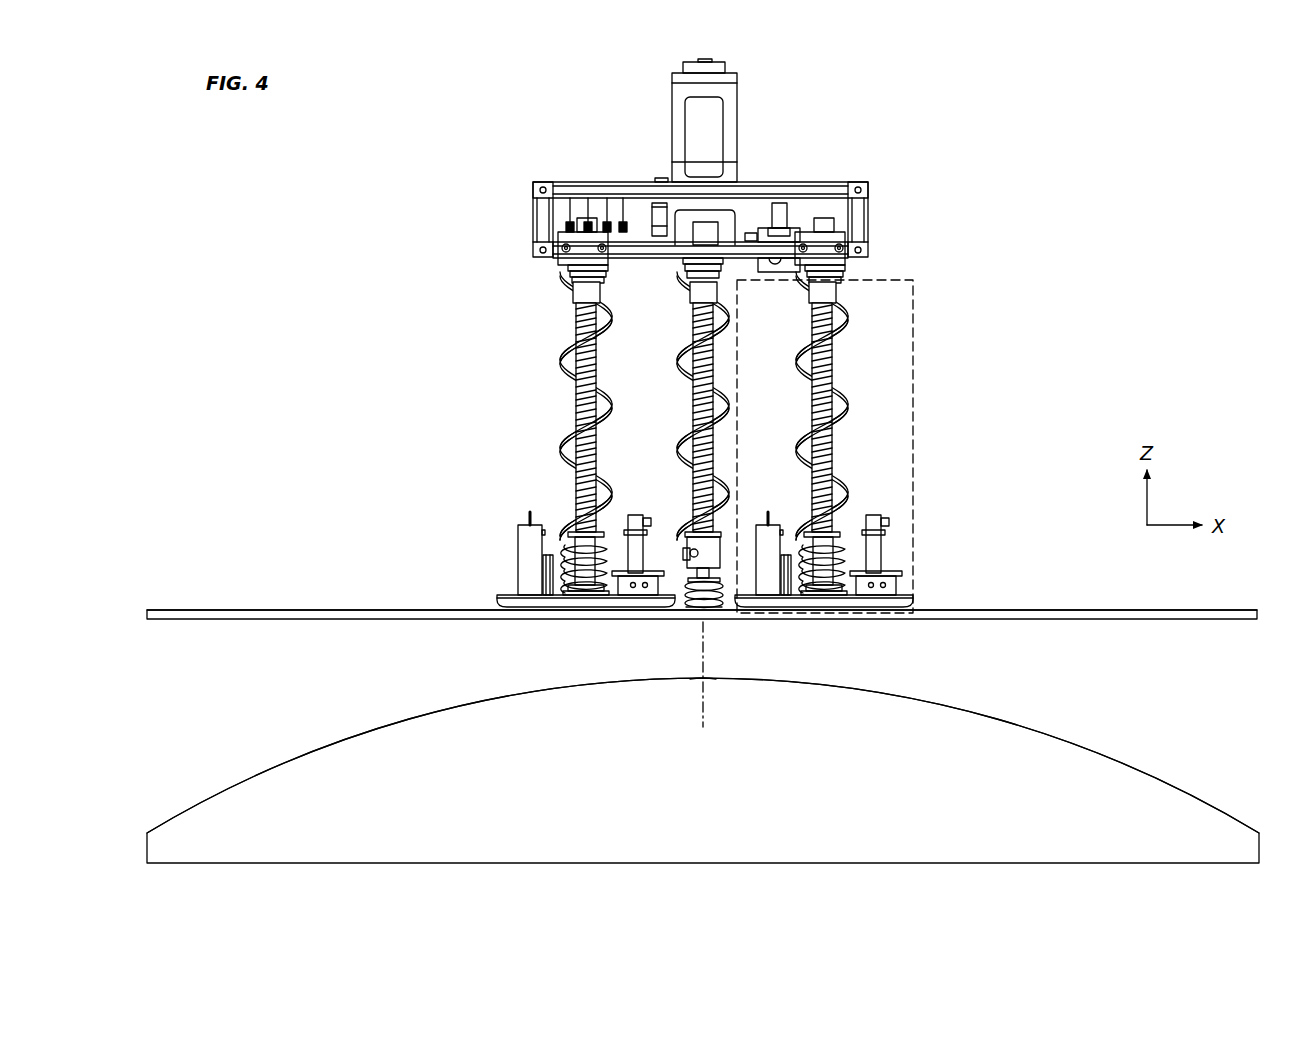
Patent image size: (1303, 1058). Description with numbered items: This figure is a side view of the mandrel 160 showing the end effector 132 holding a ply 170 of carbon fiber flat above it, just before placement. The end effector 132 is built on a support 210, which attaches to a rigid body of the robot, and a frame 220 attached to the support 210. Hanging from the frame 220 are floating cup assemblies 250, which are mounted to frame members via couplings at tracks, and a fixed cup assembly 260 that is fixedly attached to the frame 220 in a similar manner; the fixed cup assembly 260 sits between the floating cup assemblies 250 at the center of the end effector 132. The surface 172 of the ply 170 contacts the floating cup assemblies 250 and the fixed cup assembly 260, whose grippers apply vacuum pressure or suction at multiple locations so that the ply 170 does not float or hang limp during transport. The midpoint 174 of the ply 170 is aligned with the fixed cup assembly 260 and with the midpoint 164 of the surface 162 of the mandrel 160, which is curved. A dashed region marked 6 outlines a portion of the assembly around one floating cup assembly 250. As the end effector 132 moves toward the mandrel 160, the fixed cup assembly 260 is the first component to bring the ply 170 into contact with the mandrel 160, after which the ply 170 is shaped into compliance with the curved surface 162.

The end effector 132 is at (857, 158).
The support 210 is at (737, 130).
The frame 220 is at (770, 182).
The section view 6 is at (913, 409).
The floating cup assemblies 250 is at (490, 565).
The fixed cup assembly 260 is at (681, 528).
The ply 170 is at (167, 620).
The surface 172 is at (293, 608).
The midpoint 174 is at (700, 624).
The mandrel 160 is at (312, 748).
The surface 162 is at (947, 700).
The midpoint 164 is at (705, 675).